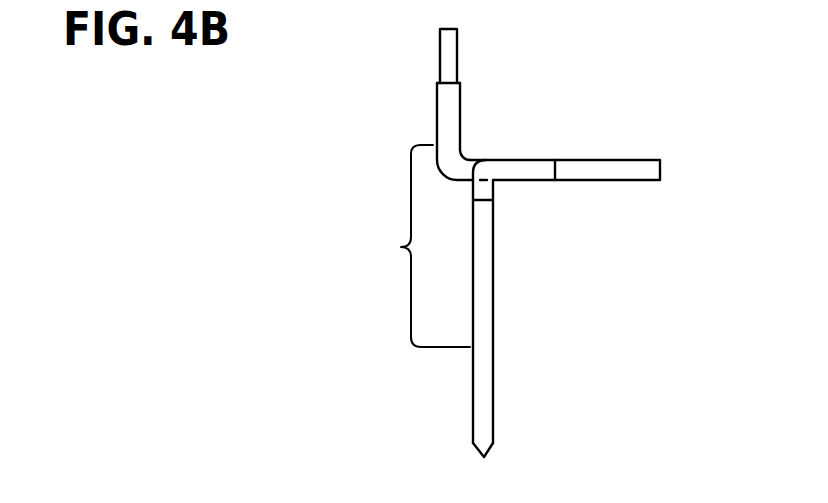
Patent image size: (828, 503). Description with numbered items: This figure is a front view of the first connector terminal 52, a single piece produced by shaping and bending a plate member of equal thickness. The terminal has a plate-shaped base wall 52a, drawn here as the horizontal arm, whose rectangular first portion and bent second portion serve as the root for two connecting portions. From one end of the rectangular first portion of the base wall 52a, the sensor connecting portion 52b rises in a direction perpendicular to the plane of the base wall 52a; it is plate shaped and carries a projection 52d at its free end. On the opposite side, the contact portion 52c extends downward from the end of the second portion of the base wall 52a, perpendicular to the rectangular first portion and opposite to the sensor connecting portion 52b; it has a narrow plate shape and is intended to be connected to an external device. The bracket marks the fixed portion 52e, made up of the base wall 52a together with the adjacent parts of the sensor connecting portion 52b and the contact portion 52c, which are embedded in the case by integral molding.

The first connector terminal 52 is at (647, 59).
The base wall 52a is at (570, 166).
The sensor connecting portion 52b is at (447, 108).
The contact portion 52c is at (483, 304).
The projection 52d is at (448, 43).
The fixed portion 52e is at (406, 246).